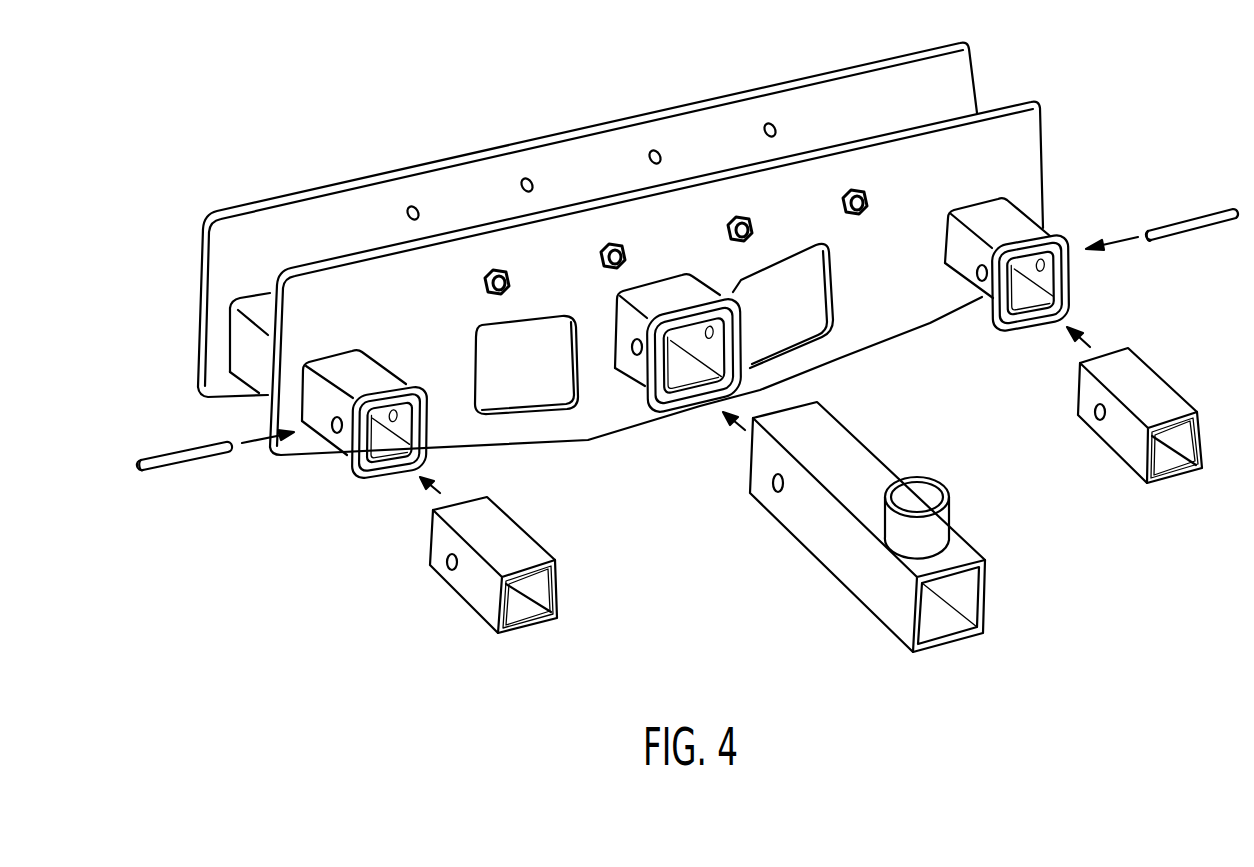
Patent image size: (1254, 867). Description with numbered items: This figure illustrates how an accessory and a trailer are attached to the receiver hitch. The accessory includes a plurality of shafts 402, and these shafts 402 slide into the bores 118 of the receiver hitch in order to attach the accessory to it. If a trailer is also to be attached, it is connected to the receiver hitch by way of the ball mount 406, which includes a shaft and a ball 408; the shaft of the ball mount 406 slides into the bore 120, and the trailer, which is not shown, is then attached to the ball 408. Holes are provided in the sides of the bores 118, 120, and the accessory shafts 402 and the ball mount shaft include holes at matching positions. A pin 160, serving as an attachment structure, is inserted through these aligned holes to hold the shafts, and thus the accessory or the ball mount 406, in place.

The bore 118 is at (320, 437).
The bore 120 is at (628, 388).
The pin 160 is at (155, 456).
The shaft 402 is at (480, 603).
The ball mount 406 is at (837, 557).
The ball 408 is at (950, 512).